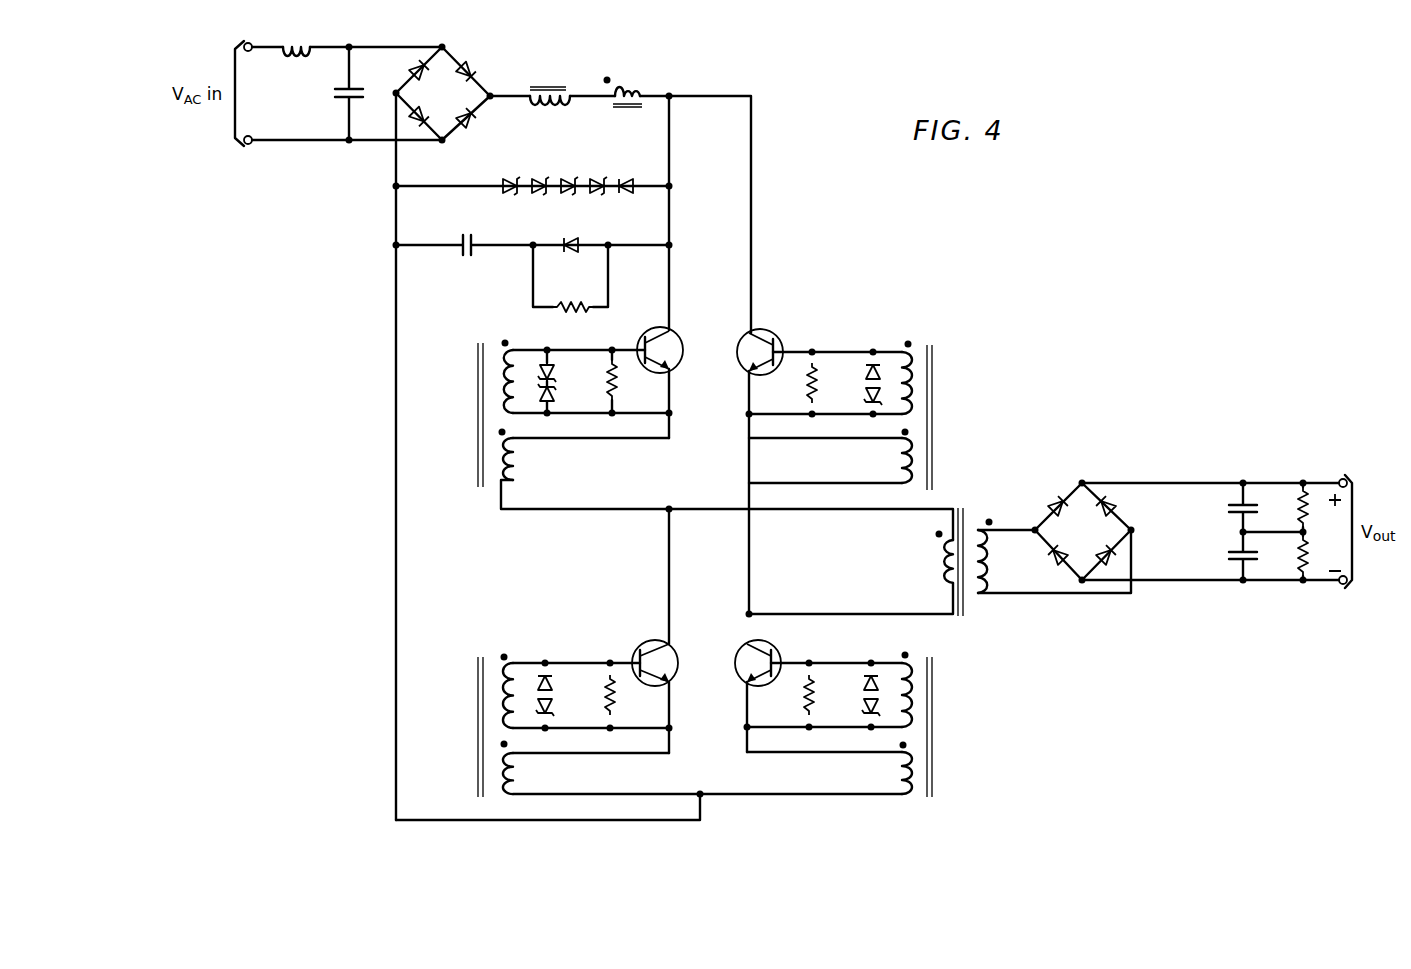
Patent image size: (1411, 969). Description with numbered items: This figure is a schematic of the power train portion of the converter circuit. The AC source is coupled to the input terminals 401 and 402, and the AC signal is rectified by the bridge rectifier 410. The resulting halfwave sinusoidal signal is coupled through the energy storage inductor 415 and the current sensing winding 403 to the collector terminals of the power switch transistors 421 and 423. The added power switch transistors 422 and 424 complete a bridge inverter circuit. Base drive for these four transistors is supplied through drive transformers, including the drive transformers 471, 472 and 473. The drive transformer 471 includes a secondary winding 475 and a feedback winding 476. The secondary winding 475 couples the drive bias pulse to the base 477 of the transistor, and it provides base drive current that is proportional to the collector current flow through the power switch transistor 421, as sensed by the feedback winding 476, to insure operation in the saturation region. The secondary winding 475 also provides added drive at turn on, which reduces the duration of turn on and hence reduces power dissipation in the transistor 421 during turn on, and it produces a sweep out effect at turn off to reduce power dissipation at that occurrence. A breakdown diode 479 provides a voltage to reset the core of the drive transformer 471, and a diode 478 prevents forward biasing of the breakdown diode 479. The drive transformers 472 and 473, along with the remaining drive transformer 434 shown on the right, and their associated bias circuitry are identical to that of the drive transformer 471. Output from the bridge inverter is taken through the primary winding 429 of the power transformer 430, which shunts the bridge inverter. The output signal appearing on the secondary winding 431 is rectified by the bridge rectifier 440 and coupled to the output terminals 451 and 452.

The input terminal 401 is at (257, 48).
The input terminal 402 is at (291, 142).
The current sensing winding 403 is at (640, 88).
The bridge rectifier 410 is at (456, 106).
The energy storage inductor 415 is at (548, 116).
The power switch transistor 421 is at (680, 341).
The power switch transistor 422 is at (681, 653).
The power switch transistor 423 is at (777, 336).
The power switch transistor 424 is at (779, 649).
The primary winding 429 is at (935, 568).
The power transformer 430 is at (897, 554).
The secondary winding 431 is at (999, 571).
The drive transformer 434 is at (926, 717).
The bridge rectifier 440 is at (1097, 538).
The output terminal 451 is at (1325, 481).
The output terminal 452 is at (1325, 584).
The drive transformer 471 is at (522, 400).
The drive transformer 472 is at (497, 714).
The drive transformer 473 is at (931, 410).
The secondary winding 475 is at (511, 400).
The feedback winding 476 is at (515, 462).
The base 477 is at (616, 350).
The diode 478 is at (553, 375).
The breakdown diode 479 is at (553, 396).